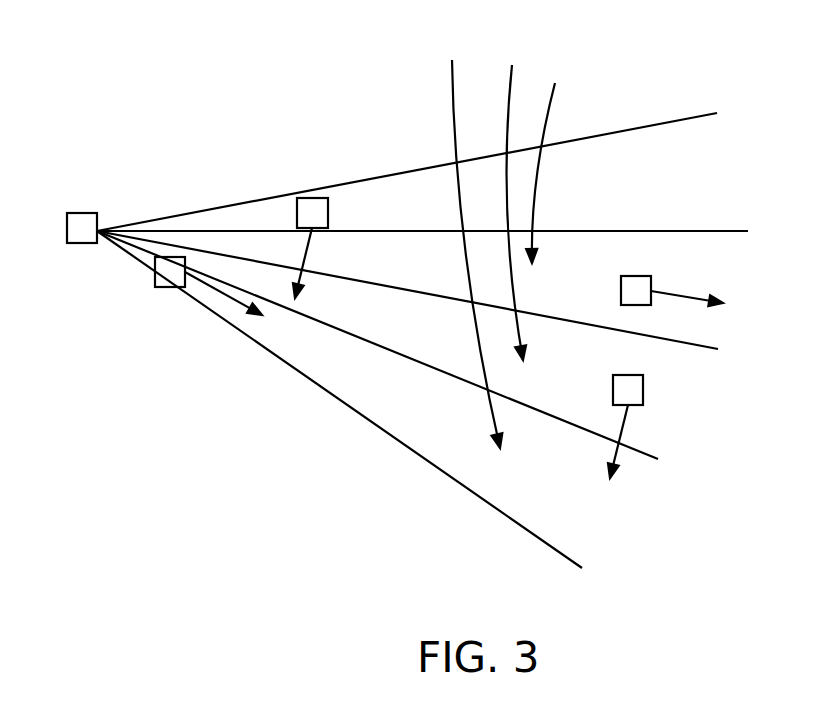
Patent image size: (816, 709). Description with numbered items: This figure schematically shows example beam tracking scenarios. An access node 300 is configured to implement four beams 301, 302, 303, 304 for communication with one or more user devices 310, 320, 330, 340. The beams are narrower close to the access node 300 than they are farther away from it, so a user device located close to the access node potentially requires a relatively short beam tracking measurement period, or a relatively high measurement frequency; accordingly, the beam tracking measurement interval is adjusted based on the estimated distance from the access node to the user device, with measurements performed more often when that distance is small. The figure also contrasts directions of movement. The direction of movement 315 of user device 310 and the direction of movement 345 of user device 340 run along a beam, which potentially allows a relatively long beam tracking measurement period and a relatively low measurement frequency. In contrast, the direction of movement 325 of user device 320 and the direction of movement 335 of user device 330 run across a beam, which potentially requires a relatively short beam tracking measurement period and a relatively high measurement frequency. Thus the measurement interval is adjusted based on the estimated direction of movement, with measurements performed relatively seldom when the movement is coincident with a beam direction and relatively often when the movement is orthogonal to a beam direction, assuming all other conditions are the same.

The access node 300 is at (80, 213).
The beam 301 is at (557, 177).
The beam 302 is at (565, 167).
The beam 303 is at (527, 199).
The beam 304 is at (467, 237).
The user device 310 is at (155, 287).
The direction of movement 315 is at (205, 285).
The user device 320 is at (328, 212).
The direction of movement 325 is at (305, 258).
The user device 330 is at (643, 388).
The direction of movement 335 is at (620, 438).
The user device 340 is at (640, 275).
The direction of movement 345 is at (686, 297).